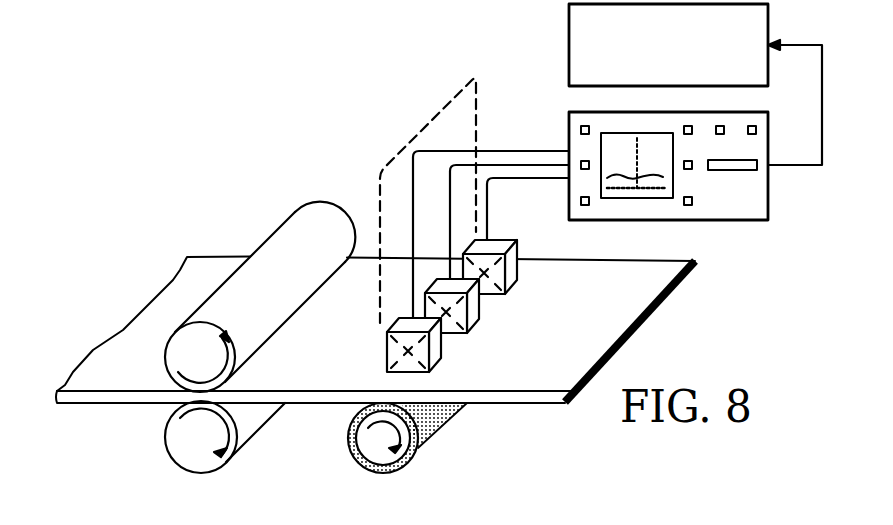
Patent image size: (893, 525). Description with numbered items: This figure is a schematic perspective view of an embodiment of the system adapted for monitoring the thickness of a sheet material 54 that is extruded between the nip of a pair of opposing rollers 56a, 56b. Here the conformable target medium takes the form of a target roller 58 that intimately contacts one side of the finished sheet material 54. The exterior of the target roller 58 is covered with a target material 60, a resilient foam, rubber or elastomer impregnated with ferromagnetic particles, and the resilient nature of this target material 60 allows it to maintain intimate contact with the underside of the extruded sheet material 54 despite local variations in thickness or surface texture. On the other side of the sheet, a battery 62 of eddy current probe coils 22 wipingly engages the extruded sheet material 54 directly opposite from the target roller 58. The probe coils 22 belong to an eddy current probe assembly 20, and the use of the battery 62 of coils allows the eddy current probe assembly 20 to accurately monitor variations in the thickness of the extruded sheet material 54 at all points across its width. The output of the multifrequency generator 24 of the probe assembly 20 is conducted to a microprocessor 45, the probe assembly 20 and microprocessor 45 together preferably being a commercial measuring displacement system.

The eddy current probe assembly 20 is at (639, 161).
The eddy current probe coils 22 is at (435, 348).
The multifrequency generator 24 is at (710, 210).
The microprocessor 45 is at (568, 50).
The sheet material 54 is at (362, 282).
The opposing roller 56a is at (288, 245).
The opposing roller 56b is at (185, 437).
The target roller 58 is at (426, 452).
The target material 60 is at (445, 417).
The battery of eddy current probe coils 62 is at (428, 129).